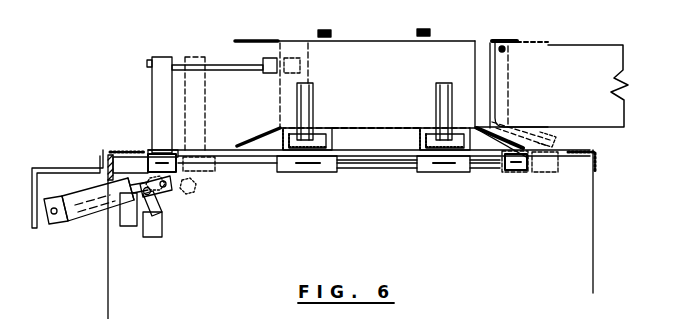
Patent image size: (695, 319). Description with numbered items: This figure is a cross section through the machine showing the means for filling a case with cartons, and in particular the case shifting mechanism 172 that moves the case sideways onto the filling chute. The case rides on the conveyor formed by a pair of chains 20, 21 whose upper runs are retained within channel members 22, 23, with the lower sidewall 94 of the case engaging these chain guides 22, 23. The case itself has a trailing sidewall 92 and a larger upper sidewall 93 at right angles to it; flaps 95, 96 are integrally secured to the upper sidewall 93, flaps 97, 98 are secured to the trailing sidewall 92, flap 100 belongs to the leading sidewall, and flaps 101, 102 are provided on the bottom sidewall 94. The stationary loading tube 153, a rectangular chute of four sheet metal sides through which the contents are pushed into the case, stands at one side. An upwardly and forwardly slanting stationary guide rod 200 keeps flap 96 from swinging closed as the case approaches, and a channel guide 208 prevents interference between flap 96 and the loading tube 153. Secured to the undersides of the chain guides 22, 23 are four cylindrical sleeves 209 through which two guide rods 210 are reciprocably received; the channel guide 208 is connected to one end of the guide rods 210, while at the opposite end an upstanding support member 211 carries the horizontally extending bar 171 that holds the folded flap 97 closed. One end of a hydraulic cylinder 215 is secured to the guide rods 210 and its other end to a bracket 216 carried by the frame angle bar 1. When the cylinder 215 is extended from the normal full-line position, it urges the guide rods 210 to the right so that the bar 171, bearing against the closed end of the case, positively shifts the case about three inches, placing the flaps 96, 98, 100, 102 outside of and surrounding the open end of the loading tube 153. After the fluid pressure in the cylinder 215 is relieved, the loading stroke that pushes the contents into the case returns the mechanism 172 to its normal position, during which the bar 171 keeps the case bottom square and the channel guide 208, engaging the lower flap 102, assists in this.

The upper longitudinally extending angle bar 1 is at (127, 150).
The chain 20 is at (288, 157).
The chain 21 is at (432, 157).
The channel member 22 is at (278, 136).
The channel member 23 is at (420, 140).
The trailing sidewall 92 is at (377, 85).
The upper sidewall 93 is at (358, 41).
The lower sidewall 94 is at (382, 134).
The flap 95 is at (245, 40).
The flap 96 is at (494, 40).
The flap 97 is at (279, 103).
The flap 98 is at (474, 76).
The flap 100 is at (487, 60).
The flap 101 is at (262, 131).
The flap 102 is at (498, 152).
The loading tube 153 is at (551, 86).
The horizontally extending bar 171 is at (276, 73).
The case shifting mechanism 172 is at (191, 205).
The stationary guide rod 200 is at (505, 49).
The channel guide 208 is at (522, 152).
The cylindrical sleeve 209 is at (313, 173).
The guide rod 210 is at (360, 168).
The upstanding support member 211 is at (152, 98).
The hydraulic cylinder 215 is at (89, 218).
The bracket 216 is at (67, 168).